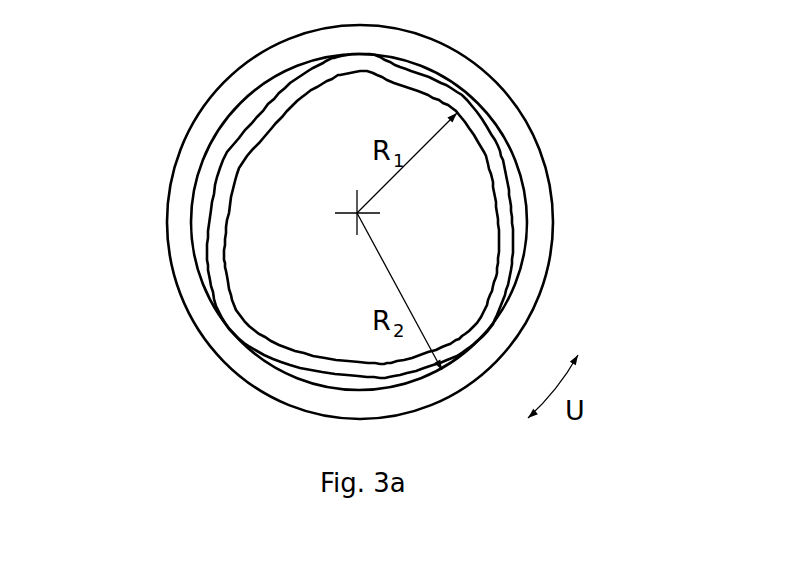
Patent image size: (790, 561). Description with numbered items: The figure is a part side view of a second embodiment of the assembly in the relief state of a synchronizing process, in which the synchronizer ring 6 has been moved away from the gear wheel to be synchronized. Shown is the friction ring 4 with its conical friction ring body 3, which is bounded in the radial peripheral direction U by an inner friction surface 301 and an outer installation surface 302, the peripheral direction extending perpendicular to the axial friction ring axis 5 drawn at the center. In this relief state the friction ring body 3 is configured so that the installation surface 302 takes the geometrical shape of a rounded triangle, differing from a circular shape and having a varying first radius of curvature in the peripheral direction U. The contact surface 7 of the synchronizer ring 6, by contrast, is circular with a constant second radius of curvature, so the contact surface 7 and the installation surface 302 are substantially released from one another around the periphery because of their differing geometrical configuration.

The friction ring body 3 is at (258, 125).
The friction ring 4 is at (258, 125).
The friction ring axis 5 is at (353, 211).
The synchronizer ring 6 is at (492, 100).
The contact surface 7 is at (192, 223).
The inner friction surface 301 is at (500, 257).
The installation surface 302 is at (509, 205).